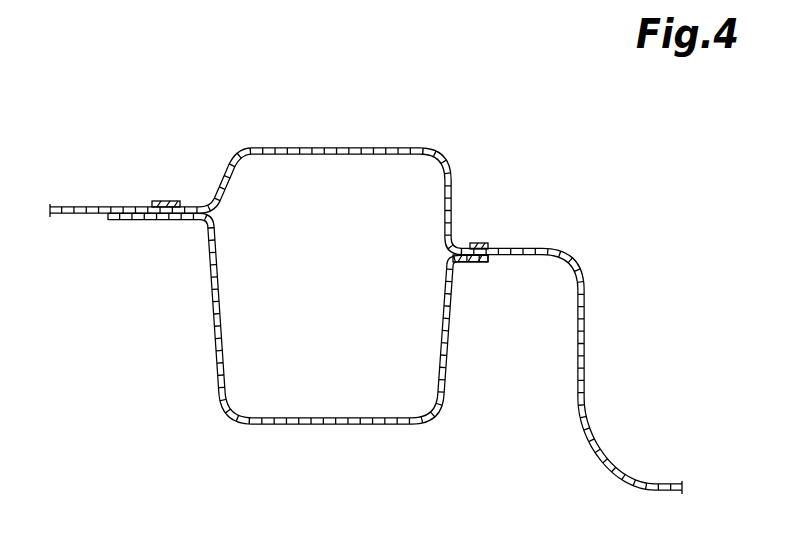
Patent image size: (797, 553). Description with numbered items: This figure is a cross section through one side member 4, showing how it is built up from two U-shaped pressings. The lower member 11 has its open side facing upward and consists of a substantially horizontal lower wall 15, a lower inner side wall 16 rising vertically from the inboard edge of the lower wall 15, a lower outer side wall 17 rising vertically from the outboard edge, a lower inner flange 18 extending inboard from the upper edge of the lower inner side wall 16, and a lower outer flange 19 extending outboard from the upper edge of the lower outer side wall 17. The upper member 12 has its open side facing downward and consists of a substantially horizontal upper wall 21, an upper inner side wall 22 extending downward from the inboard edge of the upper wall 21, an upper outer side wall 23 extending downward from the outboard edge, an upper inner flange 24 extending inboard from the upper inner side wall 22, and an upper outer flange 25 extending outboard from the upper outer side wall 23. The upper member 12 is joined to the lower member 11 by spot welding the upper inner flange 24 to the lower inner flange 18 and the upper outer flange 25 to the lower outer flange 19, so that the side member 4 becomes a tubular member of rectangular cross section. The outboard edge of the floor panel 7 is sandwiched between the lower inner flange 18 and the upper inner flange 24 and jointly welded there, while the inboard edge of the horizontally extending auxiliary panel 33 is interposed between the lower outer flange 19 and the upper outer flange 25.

The side member 4 is at (448, 137).
The floor panel 7 is at (587, 352).
The lower member 11 is at (345, 420).
The upper member 12 is at (346, 148).
The lower wall 15 is at (305, 427).
The lower inner side wall 16 is at (447, 339).
The lower outer side wall 17 is at (208, 335).
The lower inner flange 18 is at (473, 262).
The lower outer flange 19 is at (152, 221).
The upper wall 21 is at (301, 147).
The upper inner side wall 22 is at (453, 198).
The upper outer side wall 23 is at (218, 166).
The upper inner flange 24 is at (478, 243).
The upper outer flange 25 is at (170, 201).
The auxiliary panel 33 is at (62, 215).